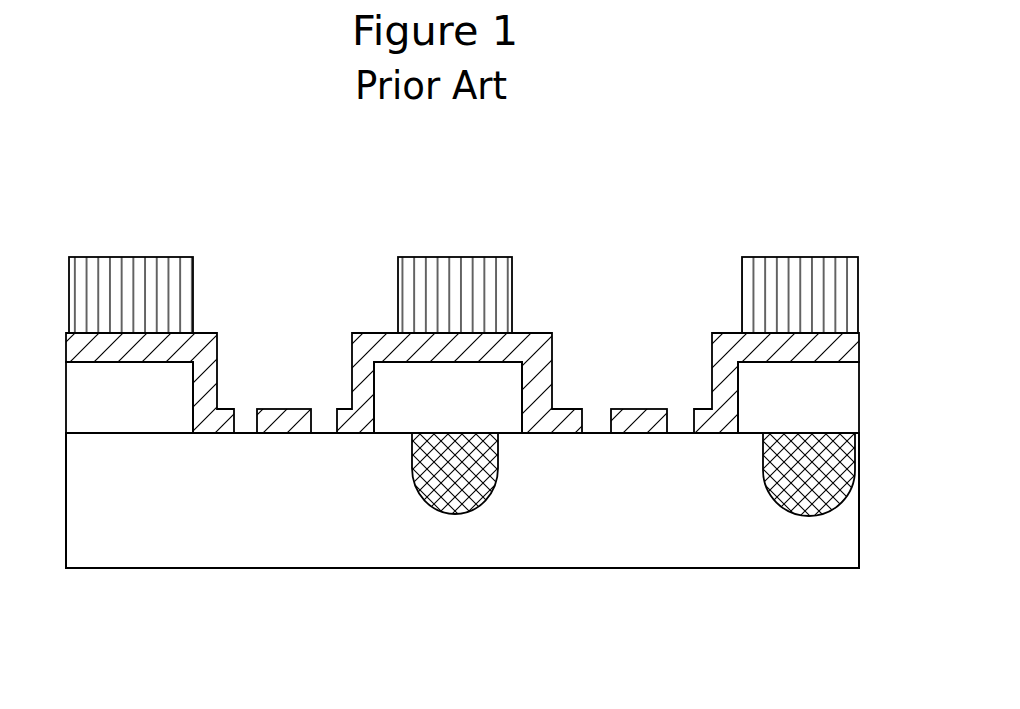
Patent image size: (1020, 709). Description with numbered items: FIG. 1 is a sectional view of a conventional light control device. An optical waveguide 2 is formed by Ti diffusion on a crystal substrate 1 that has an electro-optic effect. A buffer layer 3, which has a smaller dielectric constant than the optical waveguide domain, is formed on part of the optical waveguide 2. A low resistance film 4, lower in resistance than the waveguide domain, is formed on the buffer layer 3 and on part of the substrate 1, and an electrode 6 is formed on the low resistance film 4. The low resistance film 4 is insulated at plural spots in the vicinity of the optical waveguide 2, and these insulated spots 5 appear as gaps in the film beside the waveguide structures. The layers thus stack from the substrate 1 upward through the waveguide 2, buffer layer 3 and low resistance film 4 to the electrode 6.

The crystal substrate 1 is at (588, 570).
The optical waveguide 2 is at (853, 458).
The buffer layer 3 is at (522, 357).
The low resistance film 4 is at (213, 332).
The contact opening 5 is at (592, 433).
The electrode 6 is at (117, 255).